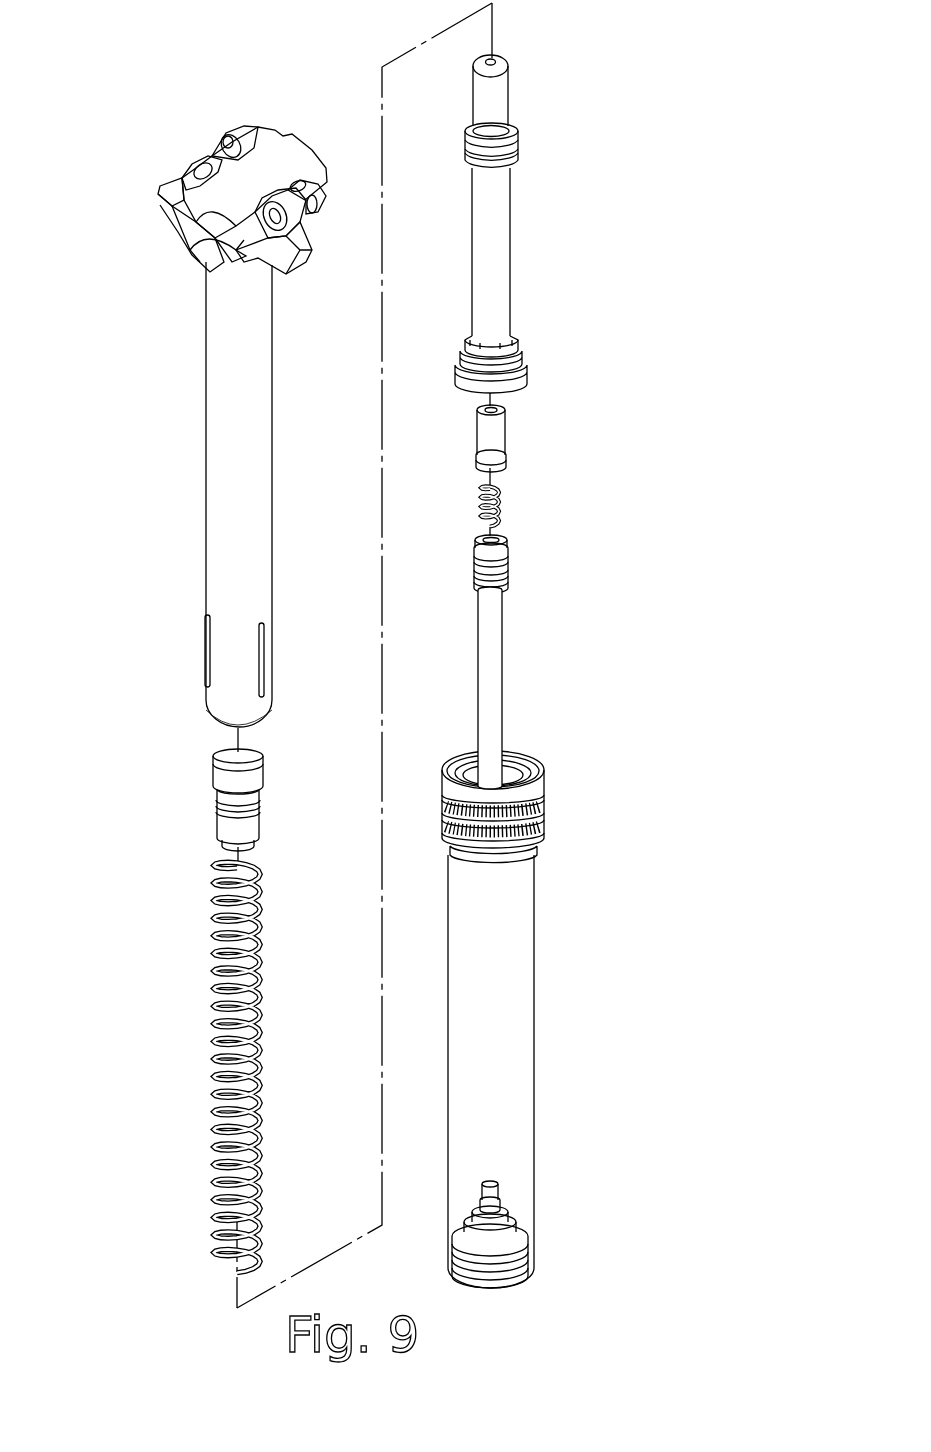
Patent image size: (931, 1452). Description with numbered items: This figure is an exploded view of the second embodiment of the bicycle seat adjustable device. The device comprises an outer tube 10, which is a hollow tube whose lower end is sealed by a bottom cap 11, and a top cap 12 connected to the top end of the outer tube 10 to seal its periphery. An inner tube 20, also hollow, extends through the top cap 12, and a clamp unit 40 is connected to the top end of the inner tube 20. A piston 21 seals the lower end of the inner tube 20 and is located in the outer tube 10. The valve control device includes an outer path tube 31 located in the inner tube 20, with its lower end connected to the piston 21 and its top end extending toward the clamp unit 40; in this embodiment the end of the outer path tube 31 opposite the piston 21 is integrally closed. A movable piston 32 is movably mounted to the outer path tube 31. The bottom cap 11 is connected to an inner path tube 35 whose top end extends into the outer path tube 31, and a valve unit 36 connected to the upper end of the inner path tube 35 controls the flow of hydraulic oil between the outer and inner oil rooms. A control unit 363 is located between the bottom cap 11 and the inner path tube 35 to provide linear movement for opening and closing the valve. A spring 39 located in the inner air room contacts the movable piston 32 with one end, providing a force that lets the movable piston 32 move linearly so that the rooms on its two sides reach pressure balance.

The outer tube 10 is at (574, 1024).
The bottom cap 11 is at (517, 1283).
The top cap 12 is at (545, 800).
The inner tube 20 is at (205, 408).
The piston 21 is at (520, 378).
The outer path tube 31 is at (502, 244).
The movable piston 32 is at (520, 146).
The inner path tube 35 is at (502, 675).
The valve unit 36 is at (535, 495).
The spring 39 is at (213, 1052).
The clamp unit 40 is at (145, 189).
The control unit 363 is at (523, 1257).